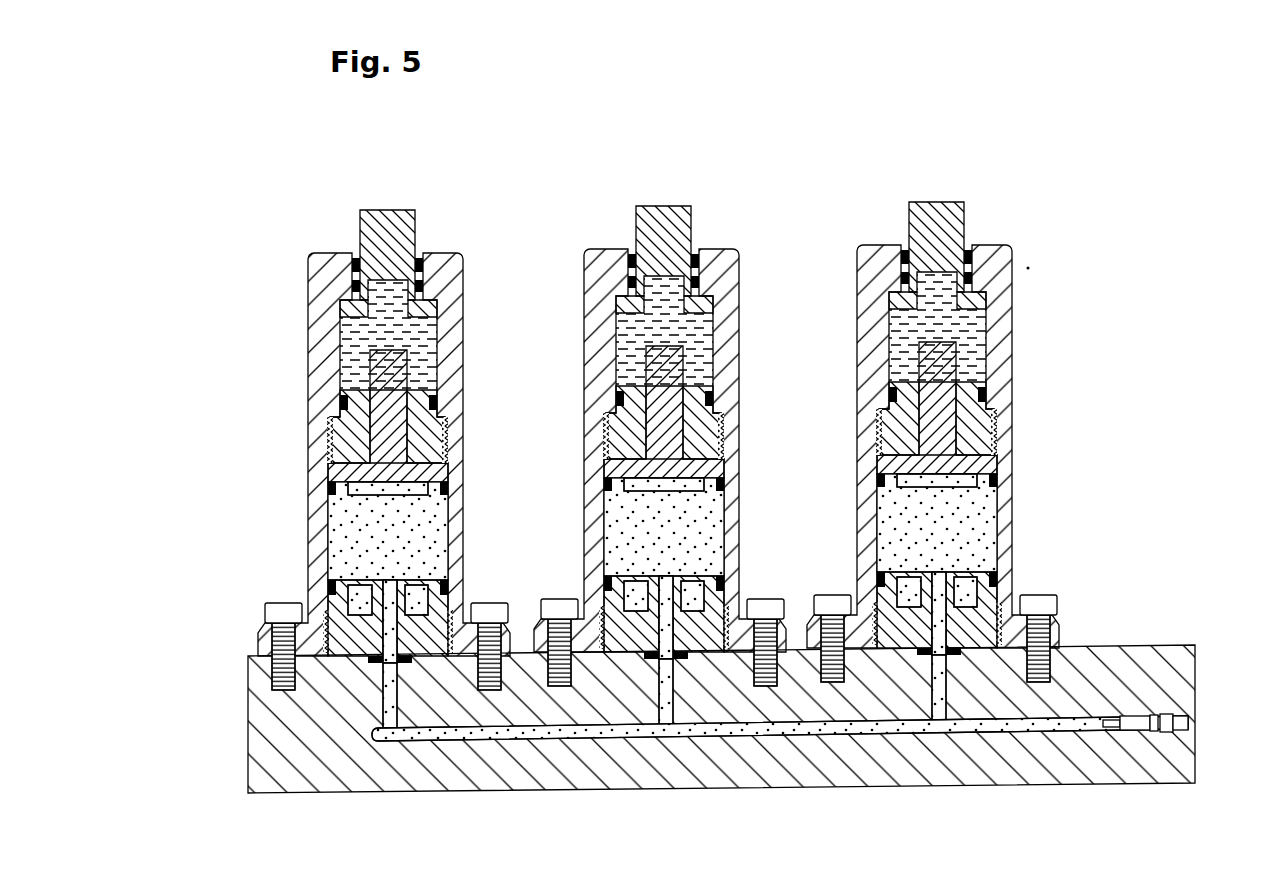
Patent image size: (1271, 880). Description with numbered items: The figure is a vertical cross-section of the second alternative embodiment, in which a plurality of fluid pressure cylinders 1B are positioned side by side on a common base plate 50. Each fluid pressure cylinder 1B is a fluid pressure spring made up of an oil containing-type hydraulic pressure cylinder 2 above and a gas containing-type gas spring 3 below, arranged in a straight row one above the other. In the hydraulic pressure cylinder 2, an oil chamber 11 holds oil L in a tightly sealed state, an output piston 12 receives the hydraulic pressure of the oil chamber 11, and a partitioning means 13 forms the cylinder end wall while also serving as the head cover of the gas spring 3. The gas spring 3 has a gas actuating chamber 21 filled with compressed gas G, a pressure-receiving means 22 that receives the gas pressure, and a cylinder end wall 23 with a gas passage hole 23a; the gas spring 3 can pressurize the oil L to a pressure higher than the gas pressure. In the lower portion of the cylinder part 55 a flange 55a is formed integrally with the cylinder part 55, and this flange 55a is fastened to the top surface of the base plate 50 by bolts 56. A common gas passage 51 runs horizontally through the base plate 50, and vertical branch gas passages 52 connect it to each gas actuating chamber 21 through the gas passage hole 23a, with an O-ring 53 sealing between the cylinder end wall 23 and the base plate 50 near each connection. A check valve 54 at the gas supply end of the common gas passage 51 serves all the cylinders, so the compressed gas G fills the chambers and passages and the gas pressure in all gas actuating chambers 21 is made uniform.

The fluid pressure cylinder 1B is at (245, 228).
The hydraulic pressure cylinder 2 is at (305, 343).
The gas spring 3 is at (306, 510).
The oil chamber 11 is at (437, 323).
The output piston 12 is at (360, 212).
The partitioning means 13 is at (330, 432).
The gas actuating chamber 21 is at (337, 535).
The pressure-receiving means 22 is at (447, 430).
The cylinder end wall 23 is at (343, 650).
The gas passage hole 23a is at (370, 664).
The base plate 50 is at (1183, 640).
The common gas passage 51 is at (590, 742).
The branch gas passage 52 is at (385, 710).
The O-ring 53 is at (400, 665).
The check valve 54 is at (1147, 737).
The cylinder part 55 is at (456, 530).
The flange 55a is at (258, 636).
The bolt 56 is at (267, 606).
The oil L is at (437, 375).
The compressed gas G is at (355, 553).